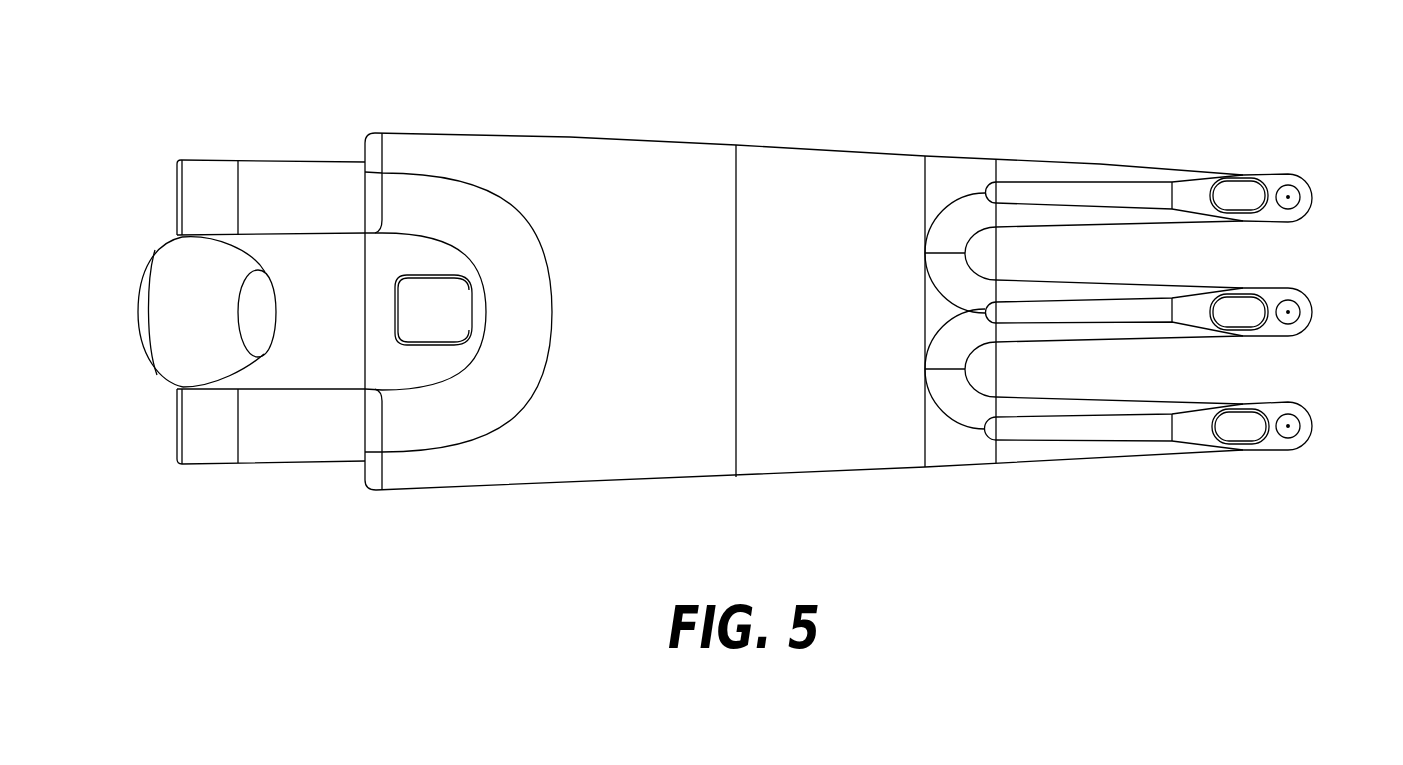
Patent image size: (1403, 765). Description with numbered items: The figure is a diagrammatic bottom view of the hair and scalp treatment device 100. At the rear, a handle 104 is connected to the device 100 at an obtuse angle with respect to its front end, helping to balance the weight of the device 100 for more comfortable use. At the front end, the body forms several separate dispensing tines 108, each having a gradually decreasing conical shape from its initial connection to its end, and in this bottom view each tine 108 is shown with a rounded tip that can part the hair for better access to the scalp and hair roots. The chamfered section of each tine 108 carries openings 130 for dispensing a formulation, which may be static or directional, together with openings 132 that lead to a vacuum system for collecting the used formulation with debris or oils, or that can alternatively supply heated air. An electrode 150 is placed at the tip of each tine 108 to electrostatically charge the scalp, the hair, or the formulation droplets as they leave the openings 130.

The hair and scalp treatment device 100 is at (828, 140).
The handle 104 is at (320, 253).
The dispensing tine 108 is at (1117, 448).
The opening 130 is at (1296, 433).
The opening 132 is at (1237, 434).
The electrode 150 is at (1296, 402).